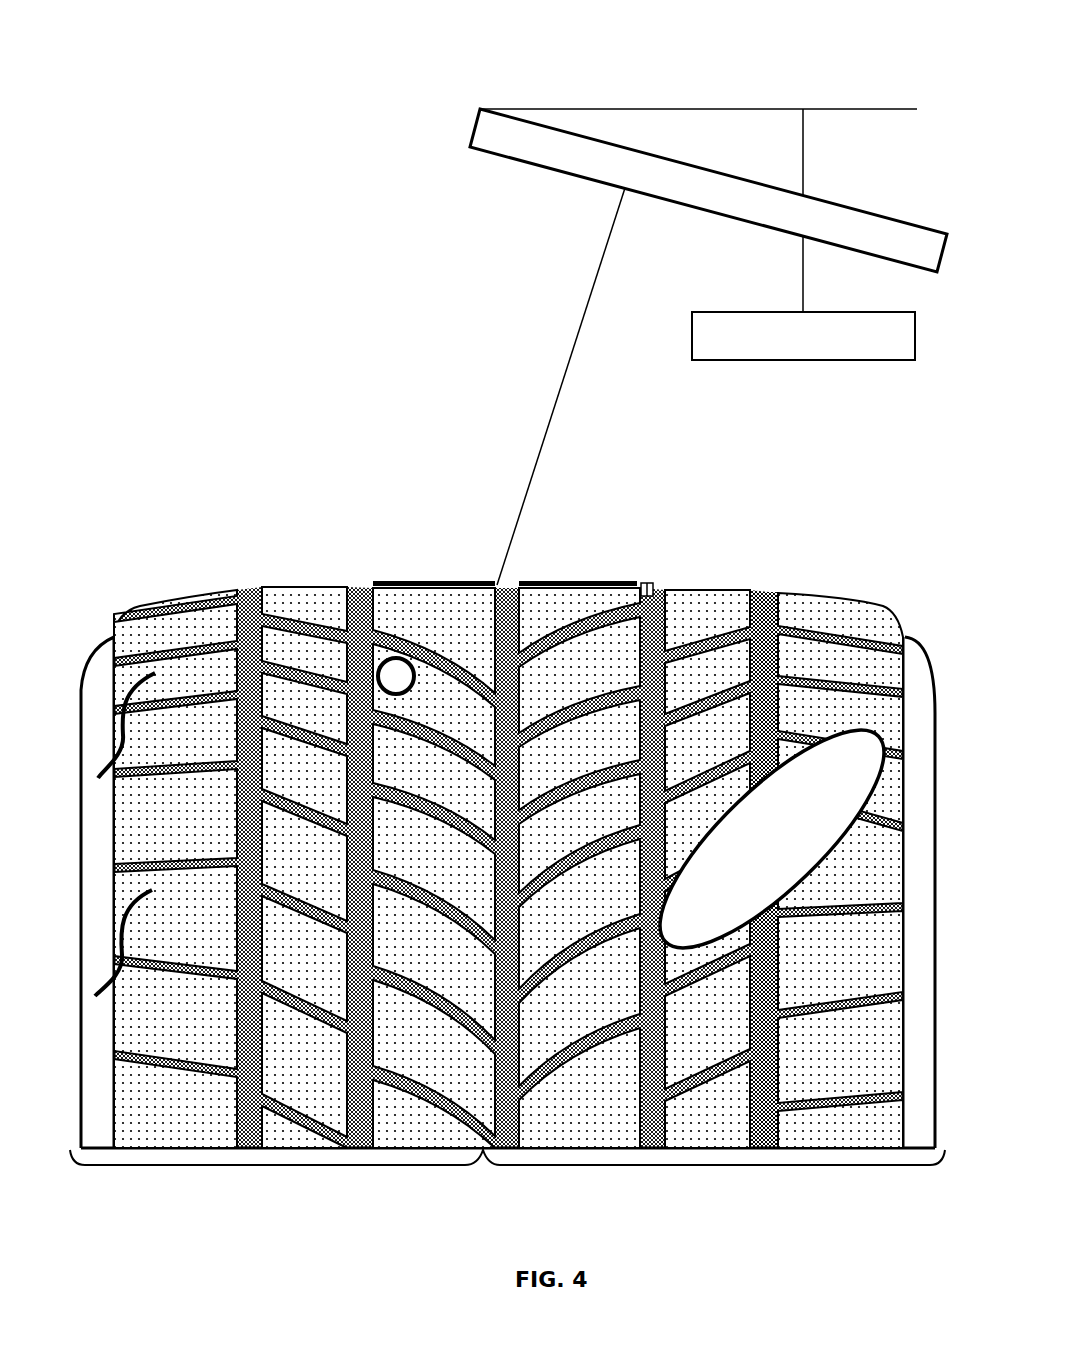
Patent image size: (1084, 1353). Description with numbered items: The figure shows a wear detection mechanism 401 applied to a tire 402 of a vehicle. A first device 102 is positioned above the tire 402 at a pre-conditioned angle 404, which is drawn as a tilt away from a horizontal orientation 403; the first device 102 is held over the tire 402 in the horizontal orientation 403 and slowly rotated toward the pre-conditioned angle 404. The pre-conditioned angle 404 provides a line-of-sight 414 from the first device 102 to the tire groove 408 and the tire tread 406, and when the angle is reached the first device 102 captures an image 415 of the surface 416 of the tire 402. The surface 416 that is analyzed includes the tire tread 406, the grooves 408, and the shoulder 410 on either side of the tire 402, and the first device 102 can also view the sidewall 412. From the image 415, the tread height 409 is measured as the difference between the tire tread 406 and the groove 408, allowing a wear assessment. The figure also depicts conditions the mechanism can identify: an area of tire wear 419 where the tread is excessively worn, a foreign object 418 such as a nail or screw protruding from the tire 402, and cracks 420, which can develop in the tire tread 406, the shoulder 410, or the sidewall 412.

The wear detection mechanism 401 is at (198, 68).
The first device 102 is at (493, 133).
The horizontal orientation 403 is at (695, 113).
The pre-conditioned angle 404 is at (788, 188).
The line-of-sight 414 is at (582, 323).
The image 415 is at (803, 336).
The tire 402 is at (478, 1192).
The tire tread 406 is at (300, 583).
The tire groove 408 is at (763, 597).
The tread height 409 is at (665, 587).
The shoulder 410 is at (833, 592).
The sidewall 412 is at (95, 668).
The surface 416 is at (440, 578).
The foreign object 418 is at (395, 660).
The tire wear 419 is at (772, 839).
The cracks 420 is at (152, 672).